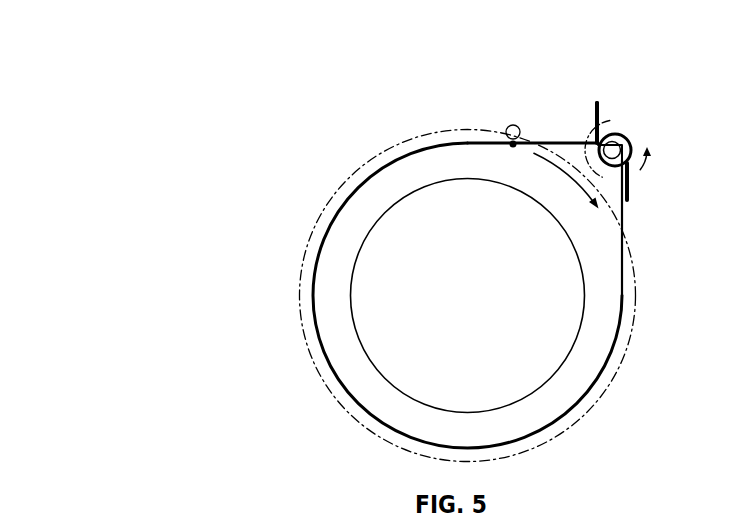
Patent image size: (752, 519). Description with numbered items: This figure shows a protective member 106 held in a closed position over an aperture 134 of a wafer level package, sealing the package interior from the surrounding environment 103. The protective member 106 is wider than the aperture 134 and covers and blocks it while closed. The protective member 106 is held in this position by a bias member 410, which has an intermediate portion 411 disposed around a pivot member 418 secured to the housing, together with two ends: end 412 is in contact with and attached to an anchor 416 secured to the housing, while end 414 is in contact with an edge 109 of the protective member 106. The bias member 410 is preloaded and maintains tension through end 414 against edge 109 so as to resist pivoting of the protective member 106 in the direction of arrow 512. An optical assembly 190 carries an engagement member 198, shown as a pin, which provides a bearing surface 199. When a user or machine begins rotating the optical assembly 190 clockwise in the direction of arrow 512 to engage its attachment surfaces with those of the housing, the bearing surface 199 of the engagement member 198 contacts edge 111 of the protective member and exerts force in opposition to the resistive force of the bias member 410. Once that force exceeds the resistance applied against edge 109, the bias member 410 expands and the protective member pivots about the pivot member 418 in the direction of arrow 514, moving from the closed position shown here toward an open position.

The environment 103 is at (297, 82).
The protective member 106 is at (310, 300).
The optical assembly 190 is at (382, 150).
The aperture 134 is at (390, 380).
The edge 111 is at (567, 142).
The engagement member 198 is at (510, 126).
The bearing surface 199 is at (511, 147).
The anchor 416 is at (589, 111).
The end 412 is at (600, 108).
The intermediate portion 411 is at (620, 142).
The bias member 410 is at (627, 115).
The pivot member 418 is at (636, 162).
The arrow 514 is at (633, 172).
The end 414 is at (633, 200).
The edge 109 is at (623, 252).
The arrow 512 is at (580, 187).